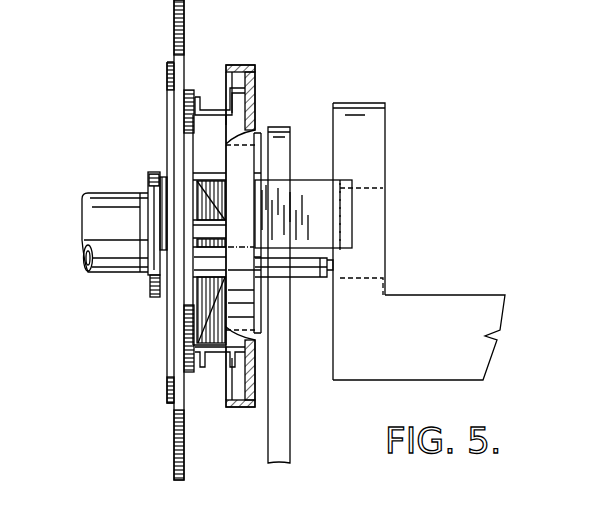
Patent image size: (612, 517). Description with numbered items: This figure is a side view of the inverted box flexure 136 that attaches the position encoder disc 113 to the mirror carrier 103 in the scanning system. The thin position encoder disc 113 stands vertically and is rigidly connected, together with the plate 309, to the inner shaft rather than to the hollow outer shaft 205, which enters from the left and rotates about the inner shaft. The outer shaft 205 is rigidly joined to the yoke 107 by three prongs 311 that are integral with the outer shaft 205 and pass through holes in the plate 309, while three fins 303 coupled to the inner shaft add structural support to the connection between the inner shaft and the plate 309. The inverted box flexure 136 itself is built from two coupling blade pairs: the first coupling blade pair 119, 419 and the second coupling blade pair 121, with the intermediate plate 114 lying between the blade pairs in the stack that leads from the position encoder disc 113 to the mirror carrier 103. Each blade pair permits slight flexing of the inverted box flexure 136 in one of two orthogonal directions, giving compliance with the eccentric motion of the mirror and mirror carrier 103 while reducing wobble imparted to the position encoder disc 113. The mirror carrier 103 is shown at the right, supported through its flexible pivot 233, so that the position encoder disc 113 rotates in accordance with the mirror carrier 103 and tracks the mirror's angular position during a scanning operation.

The mirror carrier 103 is at (435, 350).
The yoke 107 is at (280, 397).
The position encoder disc 113 is at (173, 443).
The intermediate plate 114 is at (253, 102).
The first coupling blade pair 119 is at (212, 110).
The second coupling blade pair 121 is at (323, 202).
The inverted box flexure 136 is at (302, 47).
The outer shaft 205 is at (148, 172).
The mirror carrier flexible pivot 233 is at (313, 263).
The fins 303 is at (222, 282).
The plate 309 is at (190, 134).
The prongs 311 is at (203, 262).
The first coupling blade pair 419 is at (180, 408).